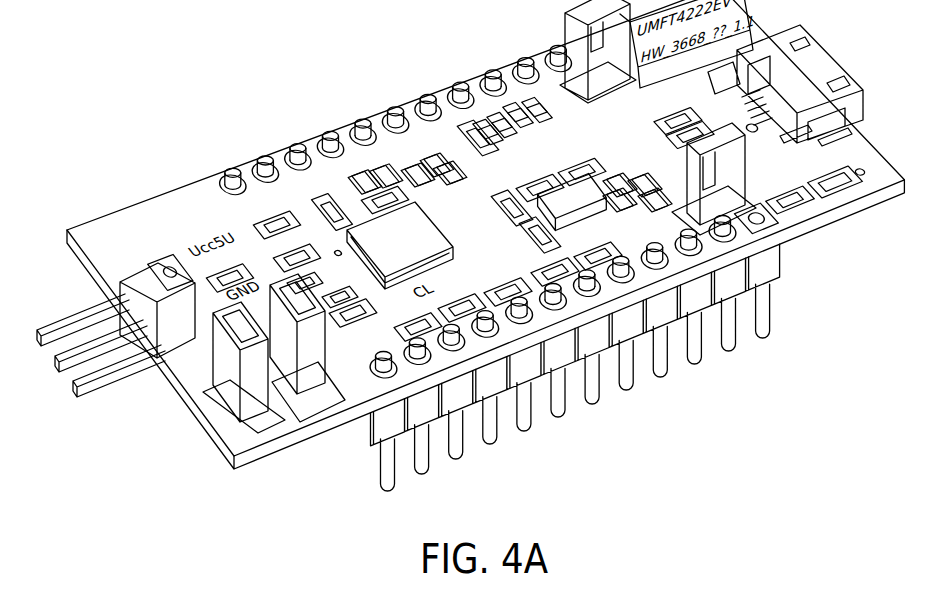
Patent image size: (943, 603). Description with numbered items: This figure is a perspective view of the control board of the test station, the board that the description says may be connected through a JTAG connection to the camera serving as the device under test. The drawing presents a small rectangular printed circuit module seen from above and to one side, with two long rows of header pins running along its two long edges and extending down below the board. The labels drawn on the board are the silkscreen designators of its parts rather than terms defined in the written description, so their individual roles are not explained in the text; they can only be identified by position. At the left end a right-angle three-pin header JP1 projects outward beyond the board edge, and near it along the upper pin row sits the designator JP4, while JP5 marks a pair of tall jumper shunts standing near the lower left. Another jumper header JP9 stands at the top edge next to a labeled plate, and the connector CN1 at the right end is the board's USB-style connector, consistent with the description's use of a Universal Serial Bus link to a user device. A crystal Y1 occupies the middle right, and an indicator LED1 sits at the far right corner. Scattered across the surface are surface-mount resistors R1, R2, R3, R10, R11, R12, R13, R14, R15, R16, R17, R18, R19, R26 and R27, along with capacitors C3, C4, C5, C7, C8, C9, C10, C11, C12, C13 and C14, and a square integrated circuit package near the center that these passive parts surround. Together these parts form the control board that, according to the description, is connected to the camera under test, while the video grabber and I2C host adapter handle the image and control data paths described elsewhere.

The right-angle jumper header JP1 is at (116, 326).
The header pin row JP4 is at (212, 200).
The jumper header with shunts JP5 is at (284, 353).
The jumper header with shunt JP9 is at (598, 57).
The USB connector CN1 is at (785, 102).
The crystal oscillator Y1 is at (584, 204).
The LED indicator LED1 is at (837, 186).
The resistor R1 is at (296, 251).
The resistor R2 is at (700, 133).
The resistor R3 is at (689, 118).
The resistor R10 is at (510, 209).
The resistor R11 is at (327, 204).
The resistor R12 is at (538, 181).
The resistor R13 is at (416, 322).
The resistor R14 is at (462, 302).
The resistor R15 is at (396, 286).
The resistor R16 is at (554, 269).
The resistor R17 is at (596, 249).
The resistor R18 is at (523, 120).
The resistor R19 is at (473, 139).
The resistor R26 is at (514, 239).
The resistor R27 is at (273, 218).
The capacitor C3 is at (620, 176).
The capacitor C4 is at (770, 184).
The capacitor C5 is at (637, 200).
The capacitor C7 is at (582, 167).
The capacitor C8 is at (531, 235).
The capacitor C9 is at (377, 201).
The capacitor C10 is at (336, 292).
The capacitor C11 is at (426, 166).
The capacitor C12 is at (371, 174).
The capacitor C13 is at (353, 321).
The capacitor C14 is at (428, 158).